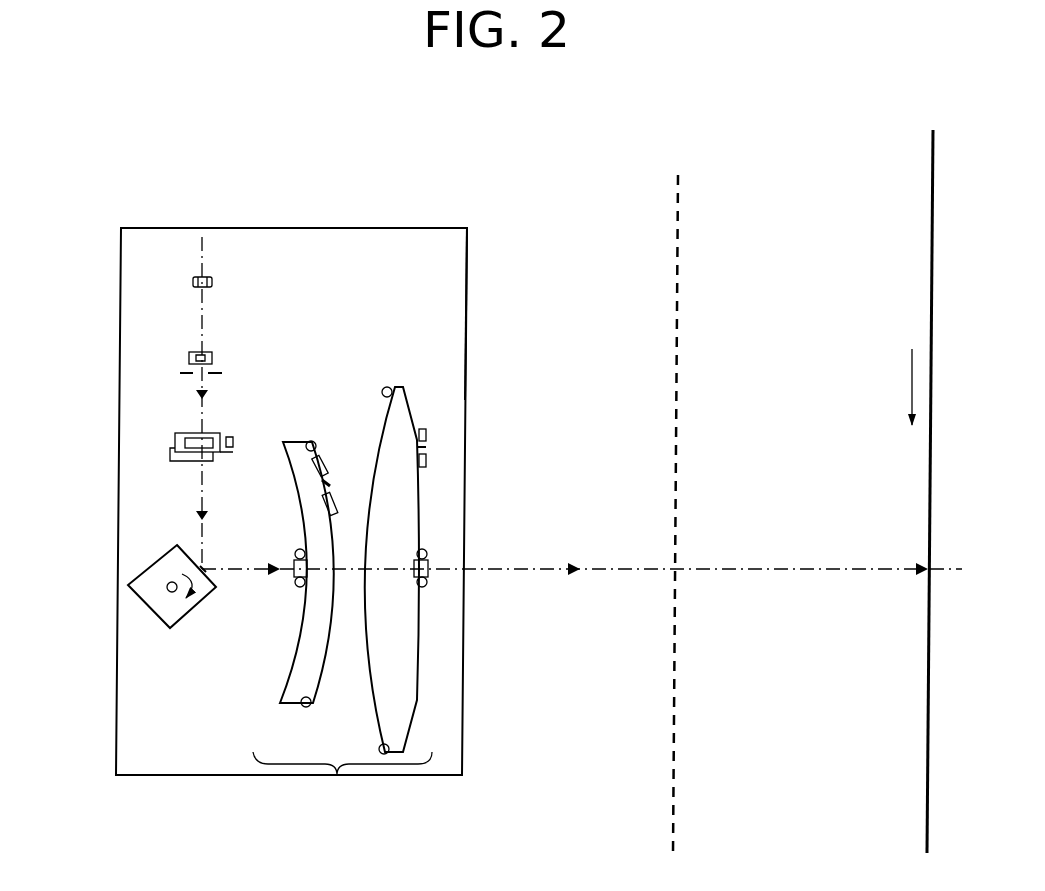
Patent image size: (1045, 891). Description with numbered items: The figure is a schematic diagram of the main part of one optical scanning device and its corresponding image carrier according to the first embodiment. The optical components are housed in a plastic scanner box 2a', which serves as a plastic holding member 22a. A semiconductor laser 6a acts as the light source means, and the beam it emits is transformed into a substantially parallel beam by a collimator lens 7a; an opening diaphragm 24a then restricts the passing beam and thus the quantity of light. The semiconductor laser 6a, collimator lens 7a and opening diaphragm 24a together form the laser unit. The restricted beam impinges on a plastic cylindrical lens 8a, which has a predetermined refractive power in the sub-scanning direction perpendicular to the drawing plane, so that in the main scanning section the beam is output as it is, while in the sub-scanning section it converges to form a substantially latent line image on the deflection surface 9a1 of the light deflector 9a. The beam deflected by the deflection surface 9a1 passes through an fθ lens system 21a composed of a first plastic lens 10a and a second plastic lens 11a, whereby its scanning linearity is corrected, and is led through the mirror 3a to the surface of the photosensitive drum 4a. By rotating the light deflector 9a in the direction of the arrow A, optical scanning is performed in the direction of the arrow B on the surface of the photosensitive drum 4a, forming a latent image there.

The plastic scanner box 2a' is at (298, 463).
The plastic holding member 22a is at (453, 292).
The semiconductor laser 6a is at (213, 275).
The collimator lens 7a is at (222, 346).
The opening diaphragm 24a is at (183, 370).
The plastic cylindrical lens 8a is at (176, 436).
The light deflector 9a is at (167, 605).
The deflection surface 9a1 is at (215, 582).
The first plastic lens 10a is at (296, 440).
The second plastic lens 11a is at (406, 409).
The fθ lens system 21a is at (342, 781).
The mirror 3a is at (680, 213).
The photosensitive drum 4a is at (930, 185).
The direction of rotation of the light deflector A is at (199, 604).
The scanning direction B is at (912, 383).